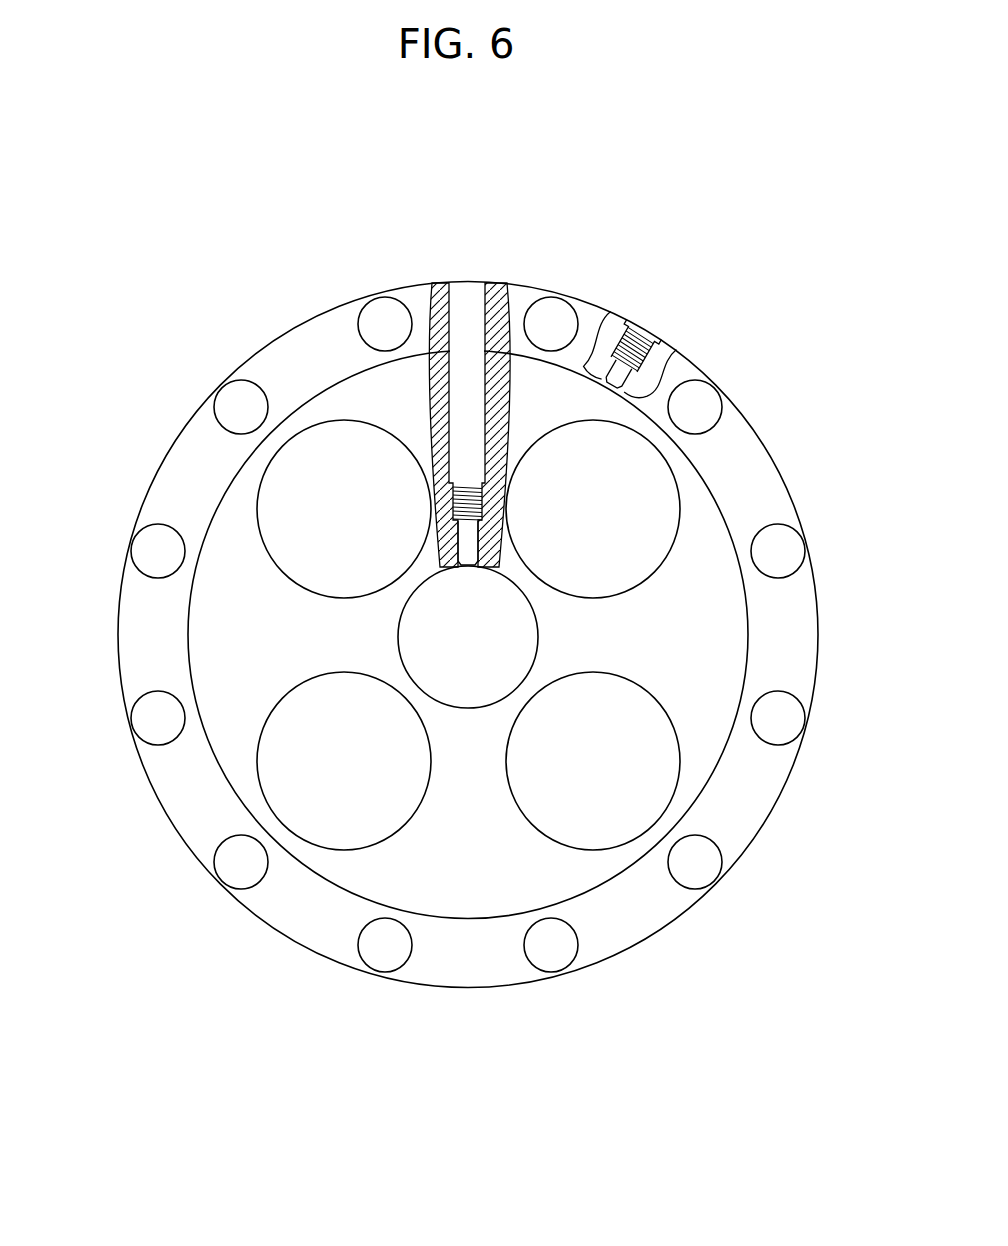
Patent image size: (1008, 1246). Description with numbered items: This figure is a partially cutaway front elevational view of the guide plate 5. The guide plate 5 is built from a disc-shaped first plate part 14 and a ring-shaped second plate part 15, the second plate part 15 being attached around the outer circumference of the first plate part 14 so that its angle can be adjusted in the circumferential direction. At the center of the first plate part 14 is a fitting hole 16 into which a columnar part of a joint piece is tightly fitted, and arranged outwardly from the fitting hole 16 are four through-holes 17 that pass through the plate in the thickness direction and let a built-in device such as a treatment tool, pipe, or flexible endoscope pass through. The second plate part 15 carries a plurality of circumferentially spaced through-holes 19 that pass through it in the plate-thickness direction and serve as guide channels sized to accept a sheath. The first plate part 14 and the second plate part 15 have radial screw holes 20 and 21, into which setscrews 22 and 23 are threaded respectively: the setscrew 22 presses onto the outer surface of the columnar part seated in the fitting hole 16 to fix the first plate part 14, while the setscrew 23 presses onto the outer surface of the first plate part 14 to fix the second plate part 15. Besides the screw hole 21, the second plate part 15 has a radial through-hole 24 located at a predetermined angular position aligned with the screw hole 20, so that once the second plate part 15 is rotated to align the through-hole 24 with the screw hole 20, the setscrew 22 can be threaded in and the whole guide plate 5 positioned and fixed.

The guide plate 5 is at (163, 342).
The first plate part 14 is at (473, 898).
The second plate part 15 is at (633, 923).
The fitting hole 16 is at (507, 689).
The through-holes 17 is at (296, 556).
The through-holes 19 is at (237, 430).
The screw hole 20 is at (458, 500).
The screw hole 21 is at (633, 343).
The setscrew 22 is at (467, 540).
The setscrew 23 is at (614, 381).
The through-hole 24 is at (450, 303).